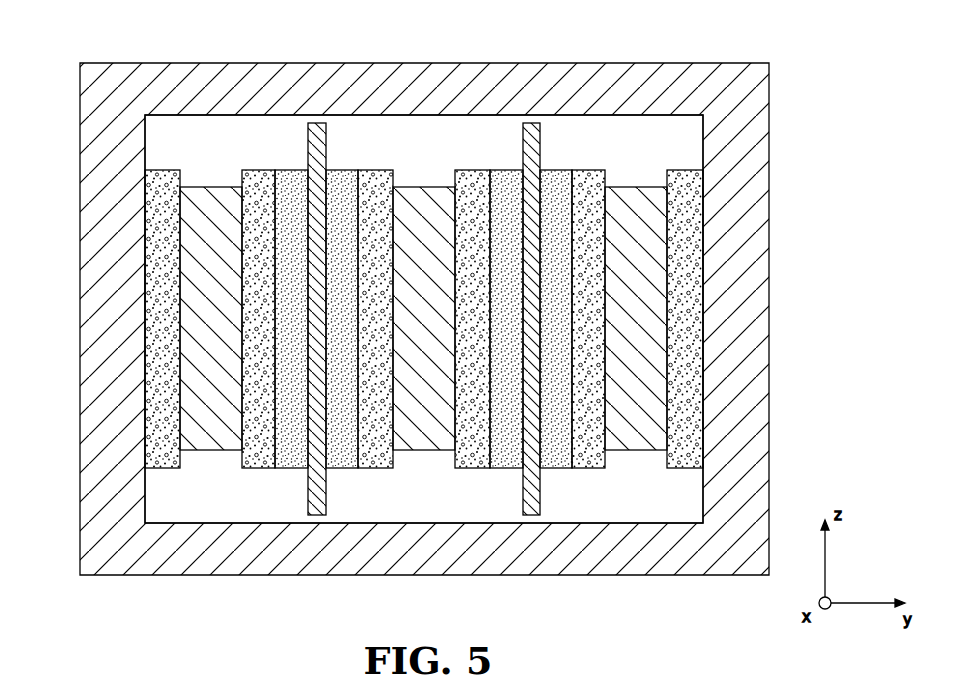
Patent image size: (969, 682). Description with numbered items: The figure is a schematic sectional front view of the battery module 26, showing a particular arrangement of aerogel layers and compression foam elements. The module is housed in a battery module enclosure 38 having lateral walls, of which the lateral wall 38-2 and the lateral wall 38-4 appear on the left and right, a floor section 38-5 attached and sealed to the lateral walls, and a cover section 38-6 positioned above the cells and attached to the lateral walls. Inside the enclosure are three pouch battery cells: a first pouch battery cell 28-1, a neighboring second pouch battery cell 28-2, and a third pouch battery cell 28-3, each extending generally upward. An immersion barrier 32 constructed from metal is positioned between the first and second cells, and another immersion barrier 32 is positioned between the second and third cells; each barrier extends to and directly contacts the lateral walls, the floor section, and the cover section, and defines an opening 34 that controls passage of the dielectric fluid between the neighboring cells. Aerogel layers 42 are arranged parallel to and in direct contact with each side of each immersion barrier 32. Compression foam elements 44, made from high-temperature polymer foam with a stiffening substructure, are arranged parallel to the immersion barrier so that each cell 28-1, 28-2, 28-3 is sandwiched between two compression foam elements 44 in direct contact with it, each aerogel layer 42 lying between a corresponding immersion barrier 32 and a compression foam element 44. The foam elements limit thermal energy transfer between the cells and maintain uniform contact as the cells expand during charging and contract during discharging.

The battery module 26 is at (455, 325).
The first pouch battery cell 28-1 is at (222, 452).
The second pouch battery cell 28-2 is at (442, 452).
The third pouch battery cell 28-3 is at (651, 452).
The immersion barrier 32 is at (308, 507).
The opening 34 is at (316, 117).
The battery module enclosure 38 is at (437, 325).
The lateral wall 38-2 is at (95, 258).
The lateral wall 38-4 is at (742, 253).
The floor section 38-5 is at (213, 568).
The cover section 38-6 is at (458, 90).
The aerogel layer 42 is at (294, 169).
The compression foam element 44 is at (166, 169).